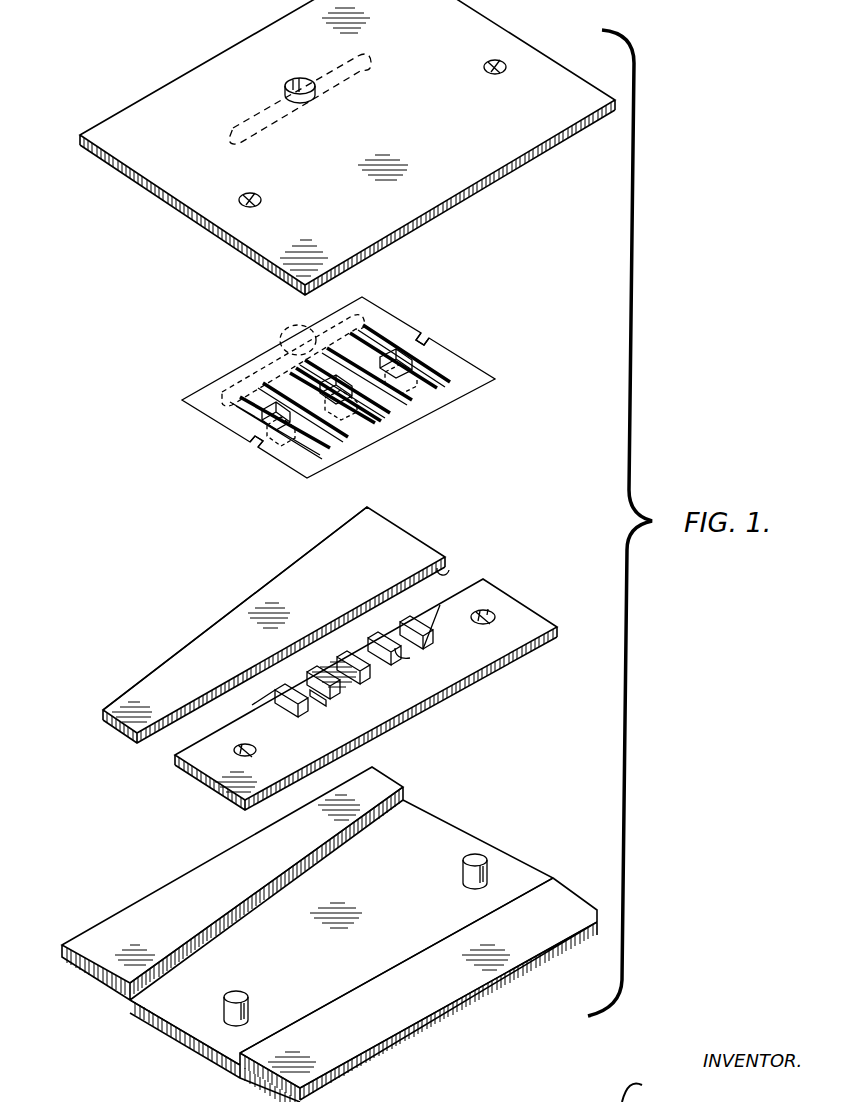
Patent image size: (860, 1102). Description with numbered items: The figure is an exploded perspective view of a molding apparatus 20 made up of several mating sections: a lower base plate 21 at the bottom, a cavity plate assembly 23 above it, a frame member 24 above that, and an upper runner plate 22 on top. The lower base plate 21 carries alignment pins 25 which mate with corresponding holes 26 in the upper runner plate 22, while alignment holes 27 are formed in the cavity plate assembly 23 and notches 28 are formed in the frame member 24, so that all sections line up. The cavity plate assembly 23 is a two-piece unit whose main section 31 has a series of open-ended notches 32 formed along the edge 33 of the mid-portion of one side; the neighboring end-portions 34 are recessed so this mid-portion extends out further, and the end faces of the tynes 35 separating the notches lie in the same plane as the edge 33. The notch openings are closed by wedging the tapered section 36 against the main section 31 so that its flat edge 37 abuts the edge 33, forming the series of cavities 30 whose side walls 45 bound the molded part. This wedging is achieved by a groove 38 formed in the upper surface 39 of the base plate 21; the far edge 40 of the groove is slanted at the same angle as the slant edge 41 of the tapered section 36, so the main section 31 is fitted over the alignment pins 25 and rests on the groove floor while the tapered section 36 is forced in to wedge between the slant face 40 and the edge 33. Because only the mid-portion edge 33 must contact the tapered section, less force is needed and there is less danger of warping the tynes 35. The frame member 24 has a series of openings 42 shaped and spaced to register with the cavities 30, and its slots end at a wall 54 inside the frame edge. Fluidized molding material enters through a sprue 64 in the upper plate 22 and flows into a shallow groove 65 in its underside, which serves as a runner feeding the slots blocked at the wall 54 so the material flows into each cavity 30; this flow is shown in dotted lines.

The molding apparatus 20 is at (150, 298).
The lower base plate 21 is at (322, 934).
The upper runner plate 22 is at (108, 166).
The cavity plate assembly 23 is at (333, 694).
The frame member 24 is at (329, 387).
The alignment pins 25 is at (480, 860).
The holes 26 is at (493, 62).
The alignment holes 27 is at (489, 614).
The notches 28 is at (440, 330).
The cavities 30 is at (392, 645).
The main section 31 is at (345, 735).
The open-ended notches 32 is at (372, 651).
The edge 33 is at (273, 707).
The end-portions 34 is at (442, 608).
The tynes 35 is at (312, 694).
The tapered section 36 is at (294, 625).
The flat edge 37 is at (447, 573).
The groove 38 is at (405, 925).
The upper surface 39 is at (360, 1000).
The far edge of the groove 40 is at (362, 830).
The slant edge 41 is at (218, 620).
The openings 42 is at (413, 364).
The side walls 45 is at (310, 694).
The wall 54 is at (398, 403).
The sprue 64 is at (300, 78).
The groove 65 is at (371, 66).